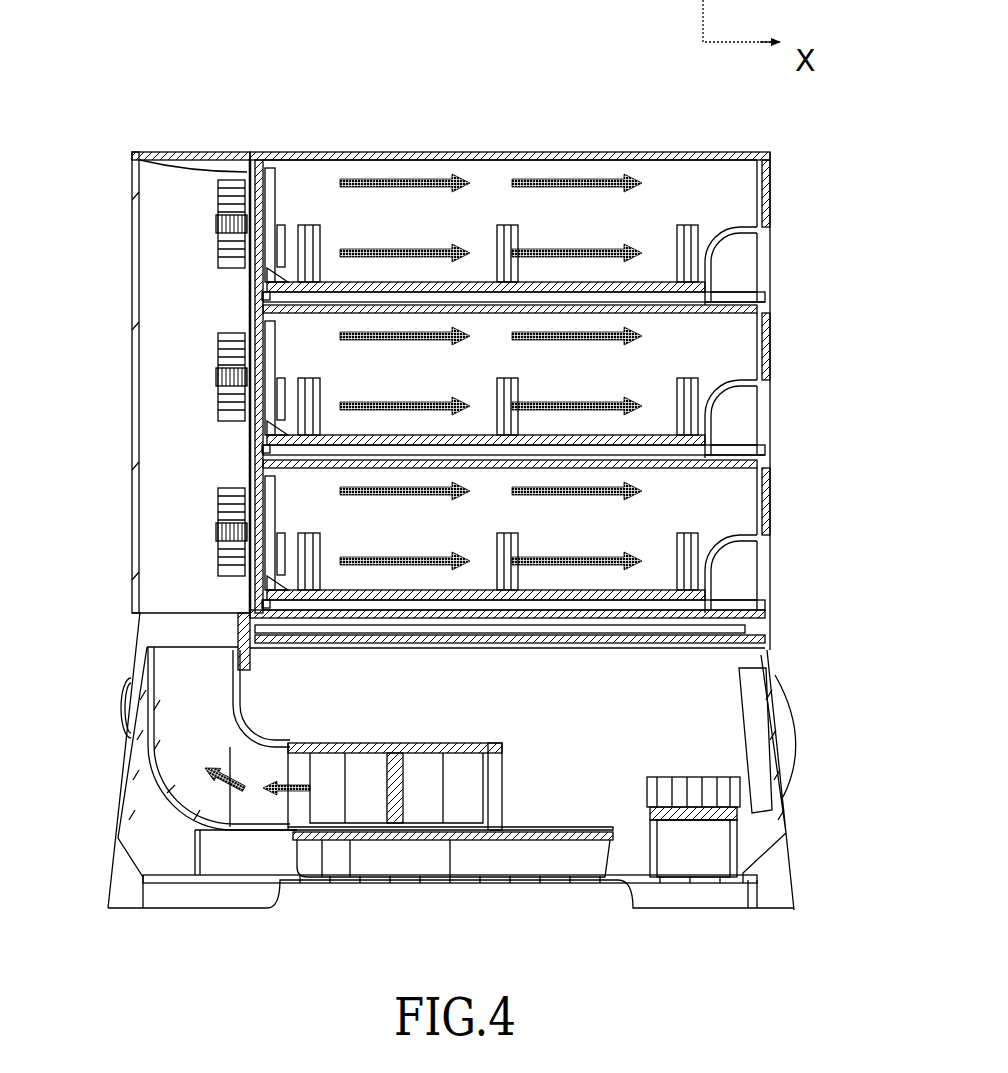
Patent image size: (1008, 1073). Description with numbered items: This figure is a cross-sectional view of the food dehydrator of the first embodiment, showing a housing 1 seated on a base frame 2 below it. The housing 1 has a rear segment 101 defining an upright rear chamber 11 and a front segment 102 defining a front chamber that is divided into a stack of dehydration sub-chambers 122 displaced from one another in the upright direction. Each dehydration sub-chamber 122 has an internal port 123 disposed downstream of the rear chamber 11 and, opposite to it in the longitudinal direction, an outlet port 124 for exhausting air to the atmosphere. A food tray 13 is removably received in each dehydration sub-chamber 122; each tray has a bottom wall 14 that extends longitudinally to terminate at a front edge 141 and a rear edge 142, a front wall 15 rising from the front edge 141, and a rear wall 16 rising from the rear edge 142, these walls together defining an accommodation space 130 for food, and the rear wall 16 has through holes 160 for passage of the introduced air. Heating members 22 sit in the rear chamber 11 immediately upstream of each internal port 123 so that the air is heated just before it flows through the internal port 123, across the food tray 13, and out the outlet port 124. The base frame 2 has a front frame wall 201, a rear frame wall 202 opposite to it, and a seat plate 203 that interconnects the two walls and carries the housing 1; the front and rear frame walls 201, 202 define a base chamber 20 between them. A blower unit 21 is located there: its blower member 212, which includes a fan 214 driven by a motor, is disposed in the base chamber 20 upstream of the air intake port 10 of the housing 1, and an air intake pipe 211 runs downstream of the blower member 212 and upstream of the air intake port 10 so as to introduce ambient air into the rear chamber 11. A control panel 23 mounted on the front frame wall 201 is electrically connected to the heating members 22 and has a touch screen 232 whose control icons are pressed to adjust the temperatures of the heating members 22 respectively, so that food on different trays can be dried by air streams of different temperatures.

The housing 1 is at (178, 72).
The rear segment 101 is at (200, 152).
The front segment 102 is at (300, 152).
The through holes 160 is at (262, 288).
The accommodation space 130 is at (582, 172).
The bottom wall 14 is at (650, 280).
The front wall 15 is at (768, 175).
The food trays 13 is at (778, 195).
The outlet port 124 is at (757, 262).
The dehydration sub-chambers 122 is at (735, 270).
The front edge 141 is at (707, 292).
The internal port 123 is at (247, 172).
The rear chamber 11 is at (173, 212).
The heating members 22 is at (226, 252).
The rear wall 16 is at (278, 262).
The rear edge 142 is at (266, 278).
The air intake port 10 is at (157, 627).
The rear frame wall 202 is at (137, 660).
The base frame 2 is at (112, 765).
The air intake pipe 211 is at (160, 795).
The front frame wall 201 is at (768, 667).
The seat plate 203 is at (752, 678).
The touch screen 232 is at (777, 720).
The base chamber 20 is at (718, 735).
The control panel 23 is at (803, 776).
The fan 214 is at (362, 790).
The blower unit 21 is at (419, 812).
The blower member 212 is at (427, 790).